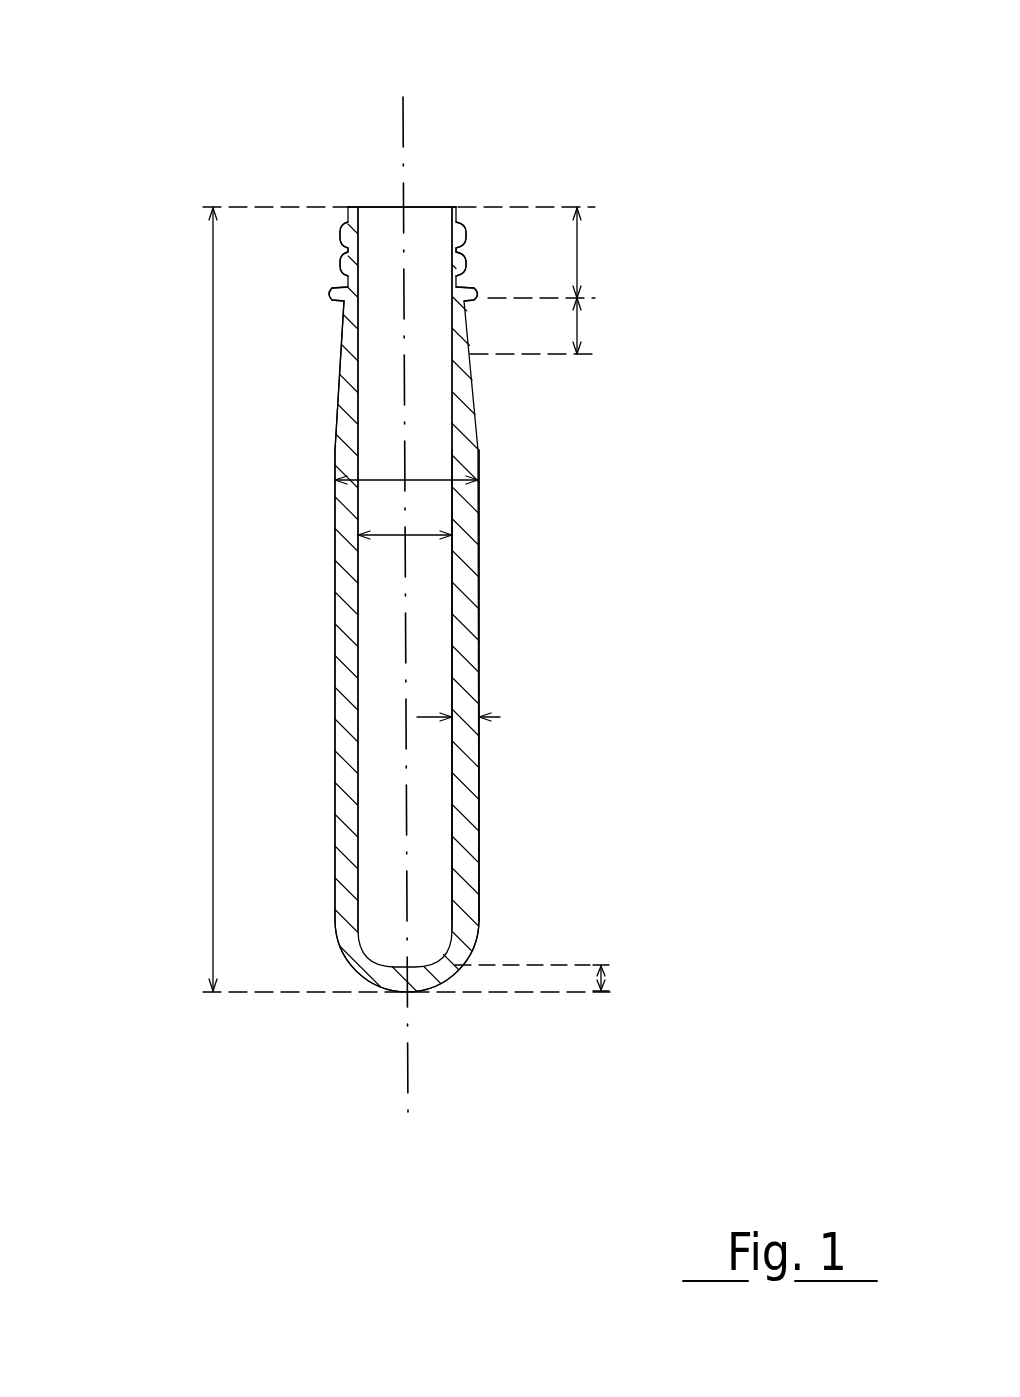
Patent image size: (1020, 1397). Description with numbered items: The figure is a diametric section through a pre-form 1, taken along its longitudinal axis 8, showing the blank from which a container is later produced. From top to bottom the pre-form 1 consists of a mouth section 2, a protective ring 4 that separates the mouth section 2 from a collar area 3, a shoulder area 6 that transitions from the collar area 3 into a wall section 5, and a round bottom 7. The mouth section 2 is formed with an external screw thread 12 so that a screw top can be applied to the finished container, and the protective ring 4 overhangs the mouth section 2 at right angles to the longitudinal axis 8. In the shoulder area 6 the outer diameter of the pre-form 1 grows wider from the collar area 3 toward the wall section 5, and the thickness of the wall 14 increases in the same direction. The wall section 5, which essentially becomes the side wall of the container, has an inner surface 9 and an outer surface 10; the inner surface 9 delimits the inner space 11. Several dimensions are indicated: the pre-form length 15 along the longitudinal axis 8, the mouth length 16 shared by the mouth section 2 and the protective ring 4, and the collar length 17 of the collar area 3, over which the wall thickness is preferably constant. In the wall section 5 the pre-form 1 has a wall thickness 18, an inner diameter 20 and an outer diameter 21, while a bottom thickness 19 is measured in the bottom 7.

The pre-form 1 is at (468, 614).
The mouth section 2 is at (424, 226).
The collar area 3 is at (338, 323).
The protective ring 4 is at (329, 296).
The wall section 5 is at (334, 570).
The shoulder area 6 is at (334, 382).
The bottom 7 is at (395, 985).
The longitudinal axis 8 is at (408, 112).
The inner surface 9 is at (447, 657).
The outer surface 10 is at (478, 657).
The inner space 11 is at (428, 790).
The external screw thread 12 is at (465, 232).
The wall 14 is at (463, 515).
The pre-form length 15 is at (213, 790).
The mouth length 16 is at (579, 250).
The collar length 17 is at (583, 323).
The wall thickness 18 is at (500, 717).
The bottom thickness 19 is at (608, 972).
The inner diameter 20 is at (418, 542).
The outer diameter 21 is at (418, 478).